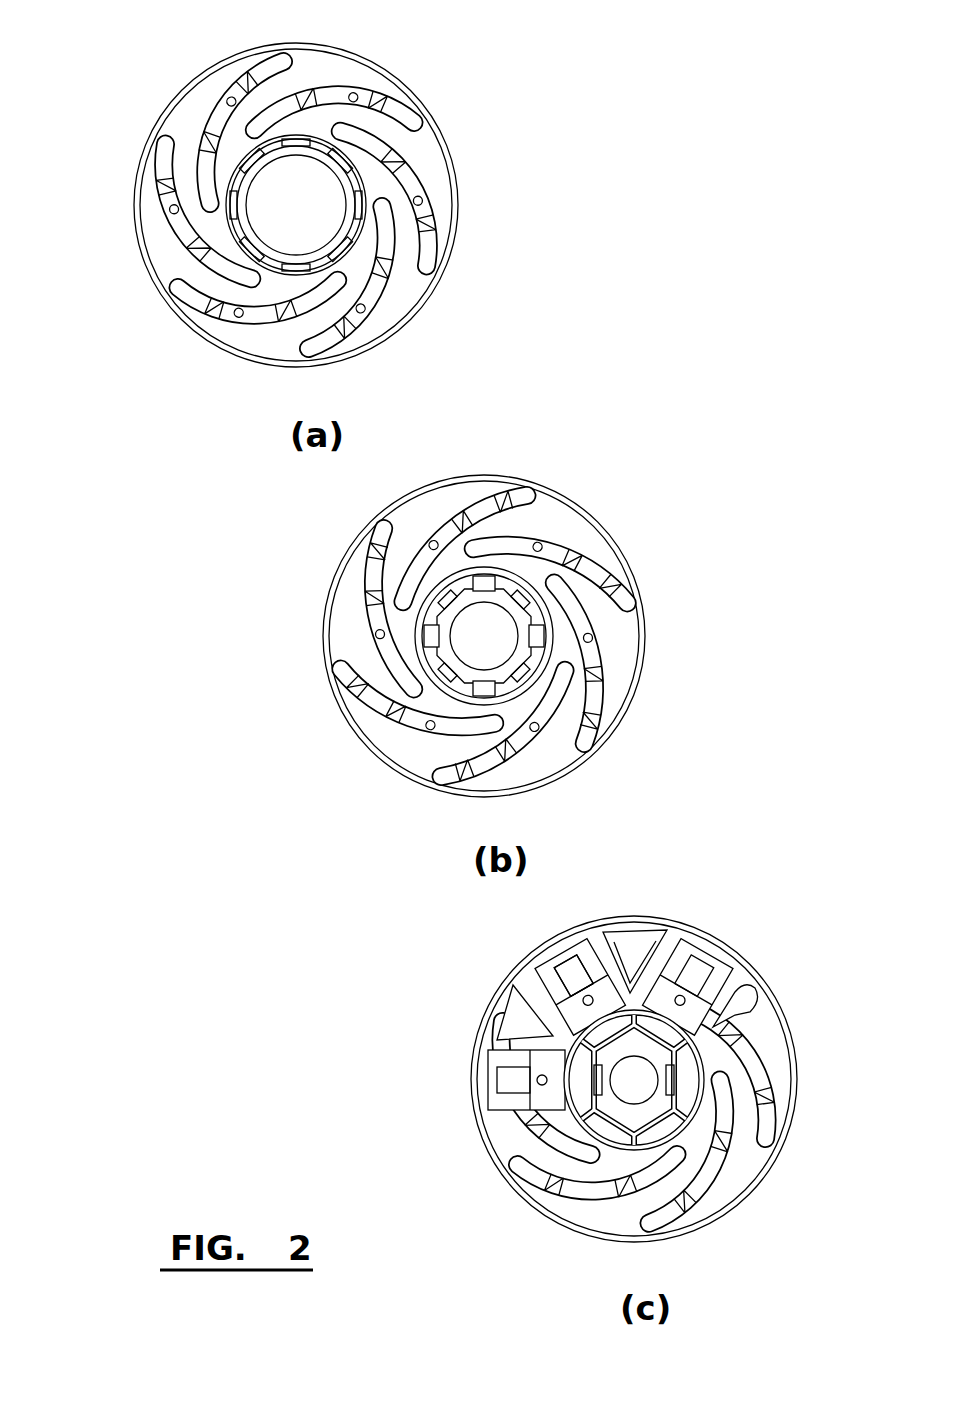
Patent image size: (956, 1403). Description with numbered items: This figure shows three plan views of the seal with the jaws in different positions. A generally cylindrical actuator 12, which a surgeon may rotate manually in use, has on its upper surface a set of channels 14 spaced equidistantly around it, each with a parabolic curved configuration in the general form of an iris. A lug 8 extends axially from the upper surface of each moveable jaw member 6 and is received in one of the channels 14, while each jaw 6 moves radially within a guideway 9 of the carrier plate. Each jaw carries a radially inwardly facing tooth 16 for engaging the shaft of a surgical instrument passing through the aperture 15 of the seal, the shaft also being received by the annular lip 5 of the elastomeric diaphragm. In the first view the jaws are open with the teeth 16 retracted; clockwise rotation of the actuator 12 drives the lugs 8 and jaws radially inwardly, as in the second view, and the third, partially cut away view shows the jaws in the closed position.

The annular lip 5 is at (465, 642).
The moveable jaw member 6 is at (589, 1020).
The lug 8 is at (427, 560).
The guideway 9 is at (582, 917).
The actuator 12 is at (465, 642).
The channel 14 is at (137, 62).
The aperture 15 is at (382, 412).
The tooth 16 is at (421, 510).